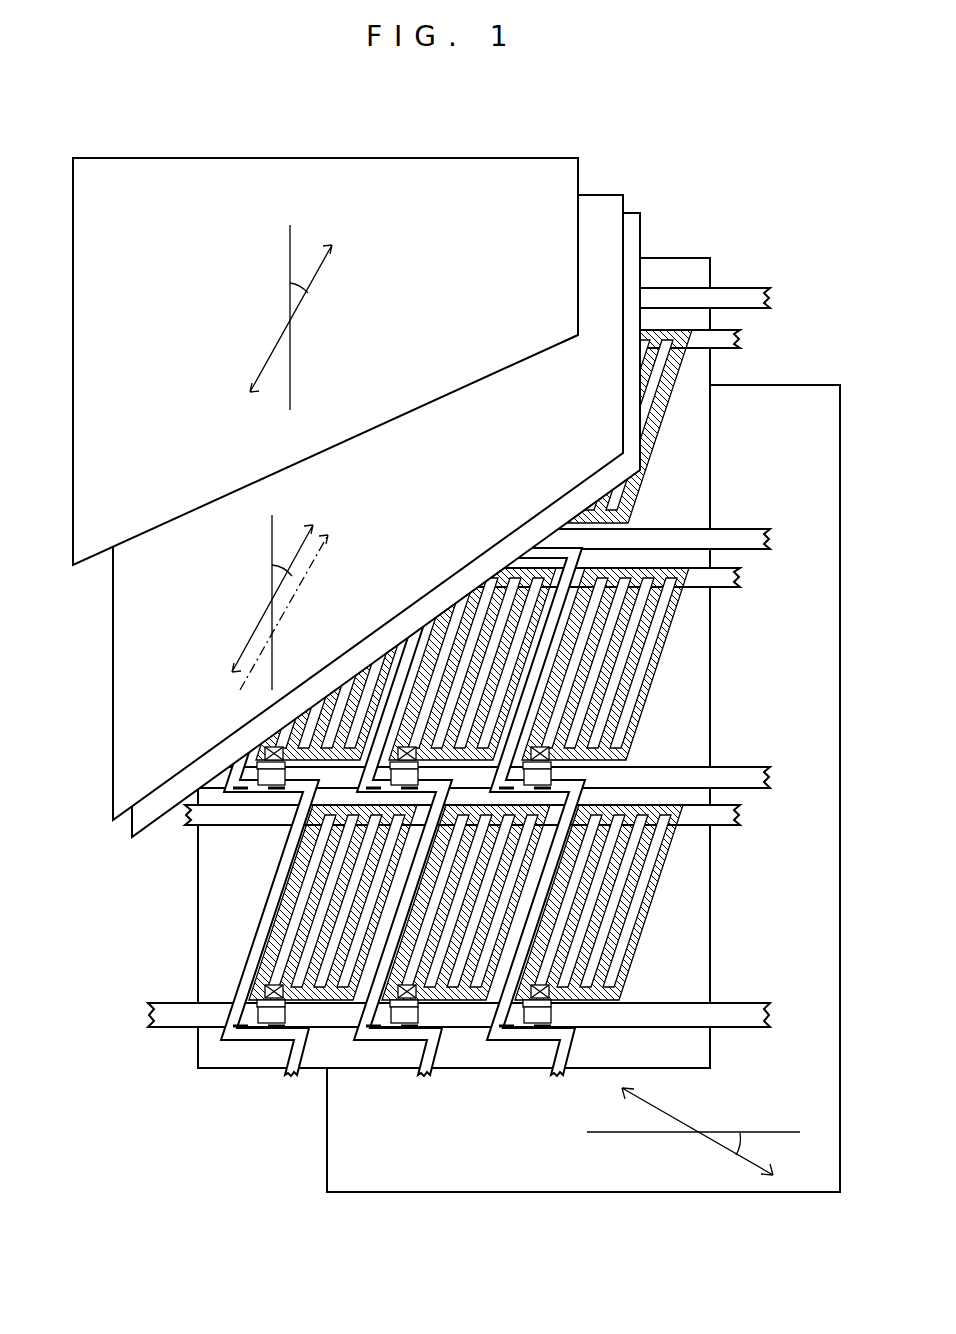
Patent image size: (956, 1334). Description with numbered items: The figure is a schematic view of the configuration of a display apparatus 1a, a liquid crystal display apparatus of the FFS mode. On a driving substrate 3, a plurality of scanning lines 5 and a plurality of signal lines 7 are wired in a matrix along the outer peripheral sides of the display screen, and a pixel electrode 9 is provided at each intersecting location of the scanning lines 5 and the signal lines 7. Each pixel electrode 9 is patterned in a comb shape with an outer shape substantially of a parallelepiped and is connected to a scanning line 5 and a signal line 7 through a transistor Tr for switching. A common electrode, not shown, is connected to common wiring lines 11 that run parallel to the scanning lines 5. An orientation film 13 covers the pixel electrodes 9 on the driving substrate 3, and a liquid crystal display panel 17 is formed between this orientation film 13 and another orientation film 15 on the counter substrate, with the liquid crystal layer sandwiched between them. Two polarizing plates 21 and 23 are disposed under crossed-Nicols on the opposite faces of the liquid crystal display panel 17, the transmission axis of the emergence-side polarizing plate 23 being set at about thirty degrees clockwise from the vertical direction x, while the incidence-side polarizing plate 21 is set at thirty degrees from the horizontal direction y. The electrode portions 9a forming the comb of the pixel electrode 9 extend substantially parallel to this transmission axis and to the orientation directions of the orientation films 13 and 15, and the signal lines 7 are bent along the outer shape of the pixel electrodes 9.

The display apparatus 1a is at (456, 653).
The driving substrate 3 is at (677, 258).
The scanning line 5 is at (762, 288).
The signal line 7 is at (290, 1077).
The pixel electrode 9 is at (514, 668).
The electrode portion 9a is at (670, 620).
The common wiring line 11 is at (740, 340).
The orientation film 13 is at (632, 213).
The orientation film 15 is at (602, 195).
The liquid crystal display panel 17 is at (409, 454).
The polarizing plate 21 is at (383, 1192).
The polarizing plate 23 is at (190, 158).
The transistor Tr is at (246, 1021).